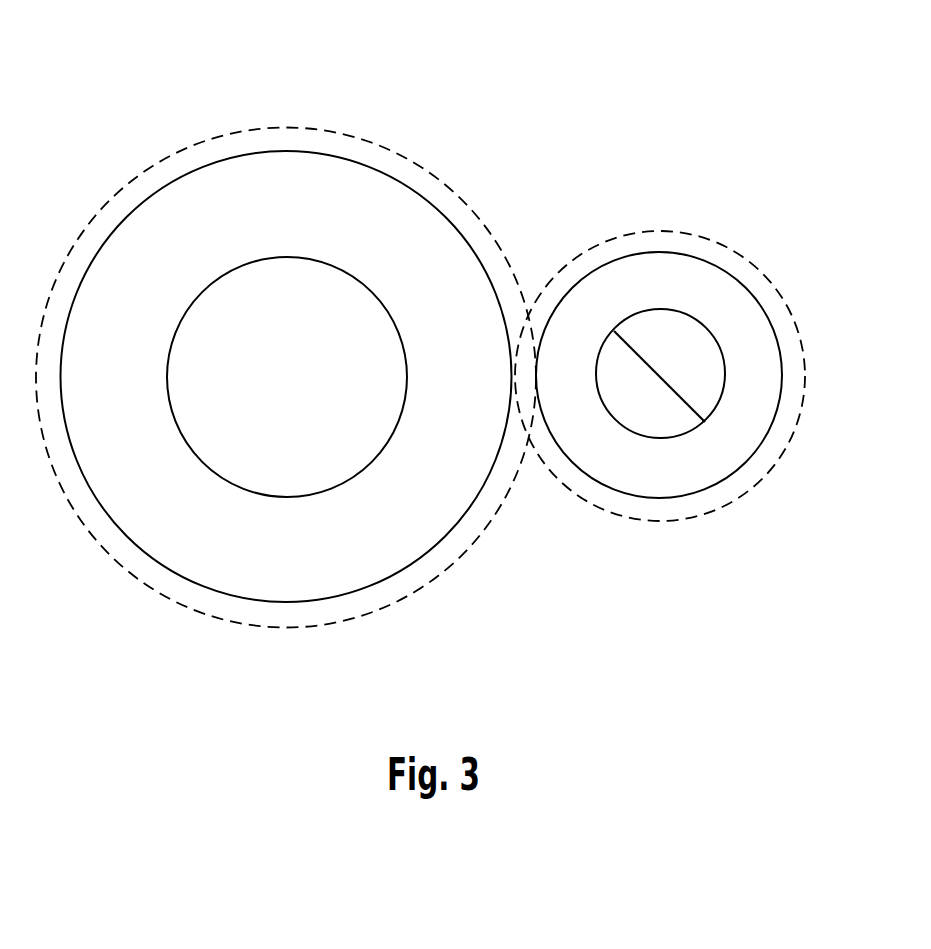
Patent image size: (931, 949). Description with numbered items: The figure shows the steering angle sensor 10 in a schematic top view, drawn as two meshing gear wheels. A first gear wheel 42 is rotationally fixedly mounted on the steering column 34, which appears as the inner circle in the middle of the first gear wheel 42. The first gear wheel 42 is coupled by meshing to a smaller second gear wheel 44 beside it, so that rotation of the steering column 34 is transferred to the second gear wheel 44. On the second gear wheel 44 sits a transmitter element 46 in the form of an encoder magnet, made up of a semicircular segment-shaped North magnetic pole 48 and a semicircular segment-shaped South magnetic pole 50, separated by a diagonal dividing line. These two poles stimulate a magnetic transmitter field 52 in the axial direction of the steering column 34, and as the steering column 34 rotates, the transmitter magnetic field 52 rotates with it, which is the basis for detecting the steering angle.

The steering angle sensor 10 is at (137, 108).
The first gear wheel 42 is at (288, 127).
The steering column 34 is at (288, 257).
The second gear wheel 44 is at (660, 231).
The transmitter element 46 is at (665, 318).
The North magnetic pole 48 is at (657, 423).
The South magnetic pole 50 is at (696, 368).
The magnetic transmitter field 52 is at (654, 333).